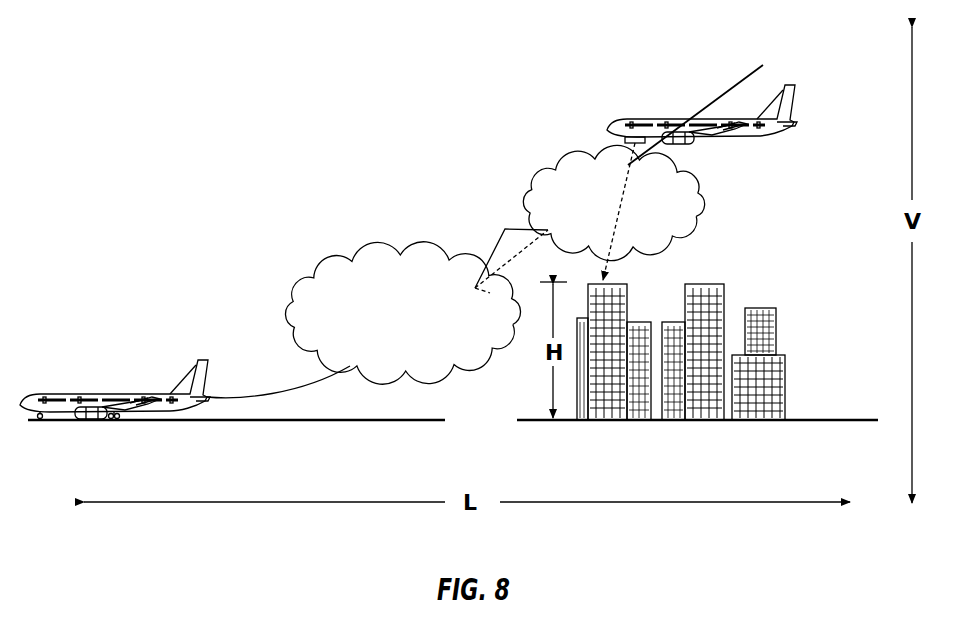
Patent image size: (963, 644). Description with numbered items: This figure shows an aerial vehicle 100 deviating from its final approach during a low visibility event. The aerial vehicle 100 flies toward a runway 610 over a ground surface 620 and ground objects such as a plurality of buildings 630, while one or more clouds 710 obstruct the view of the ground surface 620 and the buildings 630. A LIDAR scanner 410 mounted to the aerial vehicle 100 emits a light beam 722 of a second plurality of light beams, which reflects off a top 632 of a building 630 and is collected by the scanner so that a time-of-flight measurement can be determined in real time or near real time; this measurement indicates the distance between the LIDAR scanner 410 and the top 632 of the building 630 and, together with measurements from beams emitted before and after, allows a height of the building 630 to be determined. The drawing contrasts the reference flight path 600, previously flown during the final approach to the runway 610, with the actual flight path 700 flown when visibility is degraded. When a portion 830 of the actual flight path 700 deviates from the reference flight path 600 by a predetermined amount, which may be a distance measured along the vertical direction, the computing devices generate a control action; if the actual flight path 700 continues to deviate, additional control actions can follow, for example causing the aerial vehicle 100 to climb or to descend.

The aerial vehicle 100 is at (60, 383).
The LIDAR scanner 410 is at (625, 141).
The reference flight path 600 is at (490, 293).
The runway 610 is at (33, 422).
The ground surface 620 is at (858, 418).
The building 630 is at (700, 324).
The top of the building 632 is at (622, 285).
The actual flight path 700 is at (739, 82).
The clouds 710 is at (418, 329).
The light beam 722 is at (630, 181).
The portion of the actual flight path 830 is at (505, 229).